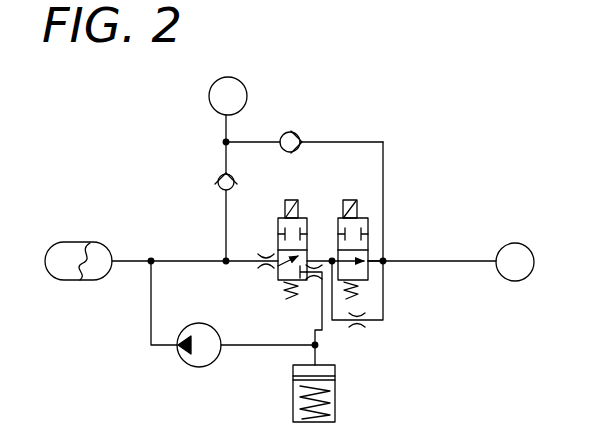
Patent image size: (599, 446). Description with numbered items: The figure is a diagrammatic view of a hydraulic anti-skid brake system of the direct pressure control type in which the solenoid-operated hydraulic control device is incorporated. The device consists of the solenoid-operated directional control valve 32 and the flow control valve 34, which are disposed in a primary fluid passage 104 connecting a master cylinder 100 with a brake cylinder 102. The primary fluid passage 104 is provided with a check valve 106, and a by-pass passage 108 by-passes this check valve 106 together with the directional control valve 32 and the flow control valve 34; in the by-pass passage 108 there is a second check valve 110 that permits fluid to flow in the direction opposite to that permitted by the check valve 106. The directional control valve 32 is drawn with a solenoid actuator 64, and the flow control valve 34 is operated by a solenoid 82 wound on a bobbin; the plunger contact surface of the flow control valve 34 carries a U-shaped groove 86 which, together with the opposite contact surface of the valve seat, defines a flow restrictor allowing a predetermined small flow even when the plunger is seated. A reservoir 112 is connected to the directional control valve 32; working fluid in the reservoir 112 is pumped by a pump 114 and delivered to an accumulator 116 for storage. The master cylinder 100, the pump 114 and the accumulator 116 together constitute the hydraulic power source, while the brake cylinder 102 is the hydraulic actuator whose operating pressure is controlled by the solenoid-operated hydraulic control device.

The master cylinder 100 is at (209, 100).
The check valve 110 is at (294, 134).
The by-pass passage 108 is at (360, 142).
The check valve 106 is at (220, 188).
The accumulator 116 is at (66, 250).
The primary fluid passage 104 is at (238, 267).
The inlet solenoid valve 64 is at (292, 200).
The solenoid 82 is at (352, 200).
The flow control valve 34 is at (371, 228).
The directional control valve 32 is at (269, 283).
The U-shaped groove 86 is at (362, 337).
The brake cylinder 102 is at (513, 246).
The pump 114 is at (204, 364).
The reservoir 112 is at (338, 402).